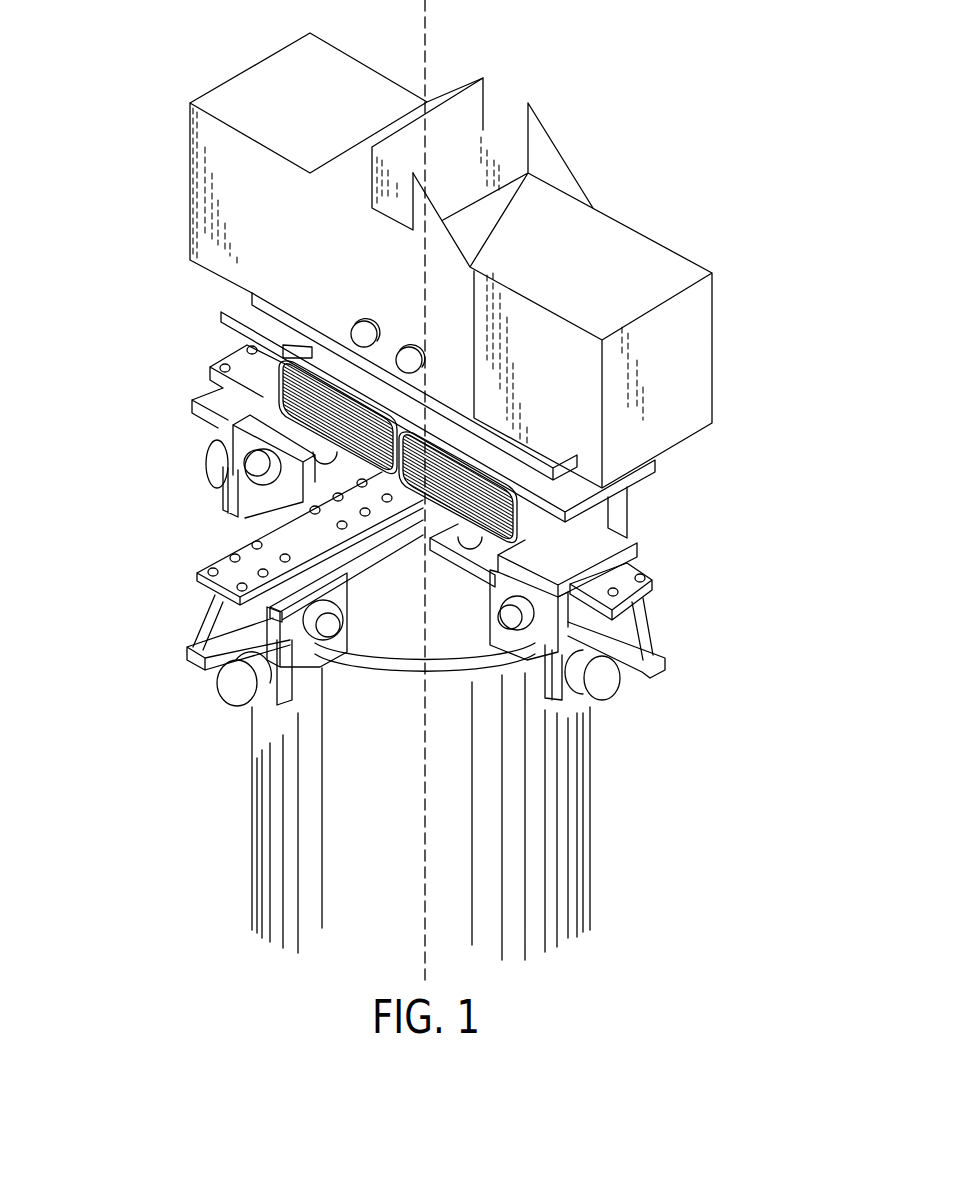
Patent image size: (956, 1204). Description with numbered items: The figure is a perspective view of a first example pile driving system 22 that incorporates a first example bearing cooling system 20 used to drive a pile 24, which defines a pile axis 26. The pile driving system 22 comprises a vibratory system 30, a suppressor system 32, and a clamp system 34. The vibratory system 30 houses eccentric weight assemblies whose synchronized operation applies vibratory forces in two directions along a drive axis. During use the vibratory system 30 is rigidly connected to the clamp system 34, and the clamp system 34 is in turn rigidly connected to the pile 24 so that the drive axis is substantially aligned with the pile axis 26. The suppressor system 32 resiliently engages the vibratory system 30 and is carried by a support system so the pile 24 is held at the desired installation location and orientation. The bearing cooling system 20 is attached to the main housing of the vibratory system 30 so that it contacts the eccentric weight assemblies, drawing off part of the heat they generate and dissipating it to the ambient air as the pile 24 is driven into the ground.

The bearing cooling system 20 is at (278, 388).
The pile driving system 22 is at (726, 177).
The pile 24 is at (568, 804).
The pile axis 26 is at (437, 8).
The vibratory system 30 is at (662, 498).
The suppressor system 32 is at (663, 607).
The clamp system 34 is at (641, 233).